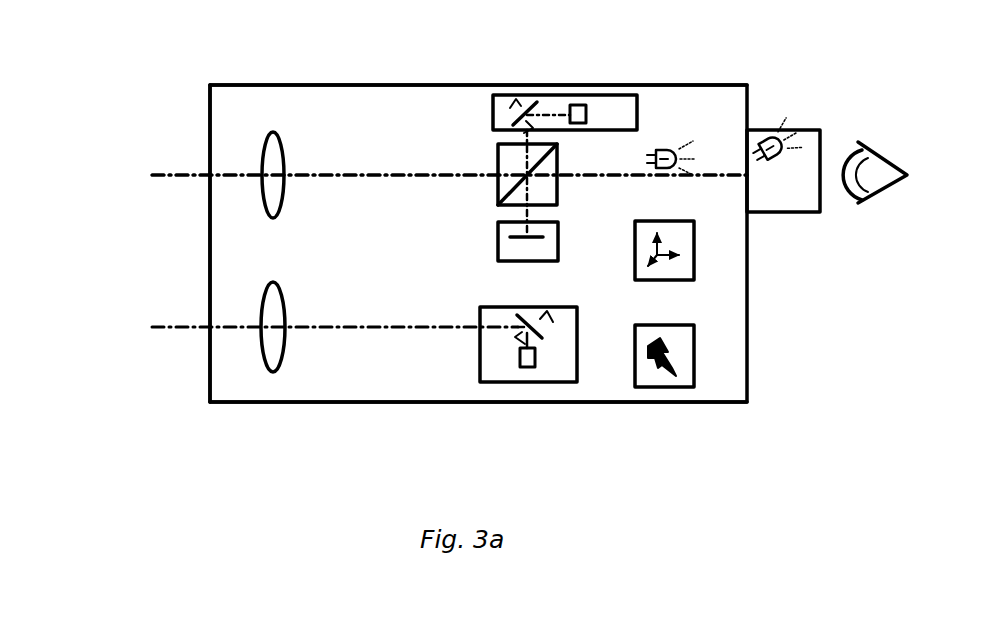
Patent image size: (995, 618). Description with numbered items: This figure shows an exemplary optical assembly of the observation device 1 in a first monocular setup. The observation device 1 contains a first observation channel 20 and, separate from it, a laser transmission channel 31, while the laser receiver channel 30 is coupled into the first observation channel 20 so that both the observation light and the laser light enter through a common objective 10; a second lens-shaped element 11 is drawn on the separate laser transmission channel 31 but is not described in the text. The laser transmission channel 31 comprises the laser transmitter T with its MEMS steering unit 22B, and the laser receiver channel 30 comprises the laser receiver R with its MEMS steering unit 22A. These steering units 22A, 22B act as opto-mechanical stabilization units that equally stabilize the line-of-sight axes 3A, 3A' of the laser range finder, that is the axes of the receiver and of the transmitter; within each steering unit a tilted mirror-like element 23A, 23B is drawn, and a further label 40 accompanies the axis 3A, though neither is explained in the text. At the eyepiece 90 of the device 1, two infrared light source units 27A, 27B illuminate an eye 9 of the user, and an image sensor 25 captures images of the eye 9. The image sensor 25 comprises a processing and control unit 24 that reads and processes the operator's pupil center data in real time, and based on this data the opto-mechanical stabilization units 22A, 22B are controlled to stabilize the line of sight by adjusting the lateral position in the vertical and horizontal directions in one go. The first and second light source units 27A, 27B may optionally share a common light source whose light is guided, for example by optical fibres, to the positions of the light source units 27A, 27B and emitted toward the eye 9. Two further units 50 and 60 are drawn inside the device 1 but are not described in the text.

The observation device 1 is at (221, 52).
The first observation channel 20 is at (232, 116).
The laser receiver channel 30 is at (232, 116).
The laser transmission channel 31 is at (233, 374).
The optical axis 40 is at (192, 173).
The line-of-sight axis 3A is at (448, 156).
The line-of-sight axis 3A' is at (306, 298).
The eye 9 is at (873, 128).
The common objective 10 is at (273, 153).
The second lens 11 is at (272, 343).
The MEMS steering unit 22A is at (562, 94).
The MEMS steering unit 22B is at (560, 382).
The first mirror 23A is at (523, 100).
The second mirror 23B is at (522, 340).
The processing and control unit 24 is at (543, 252).
The image sensor 25 is at (512, 237).
The first infrared light source unit 27A is at (664, 139).
The second infrared light source unit 27B is at (778, 168).
The power supply 50 is at (687, 376).
The controller 60 is at (687, 270).
The eyepiece 90 is at (770, 130).